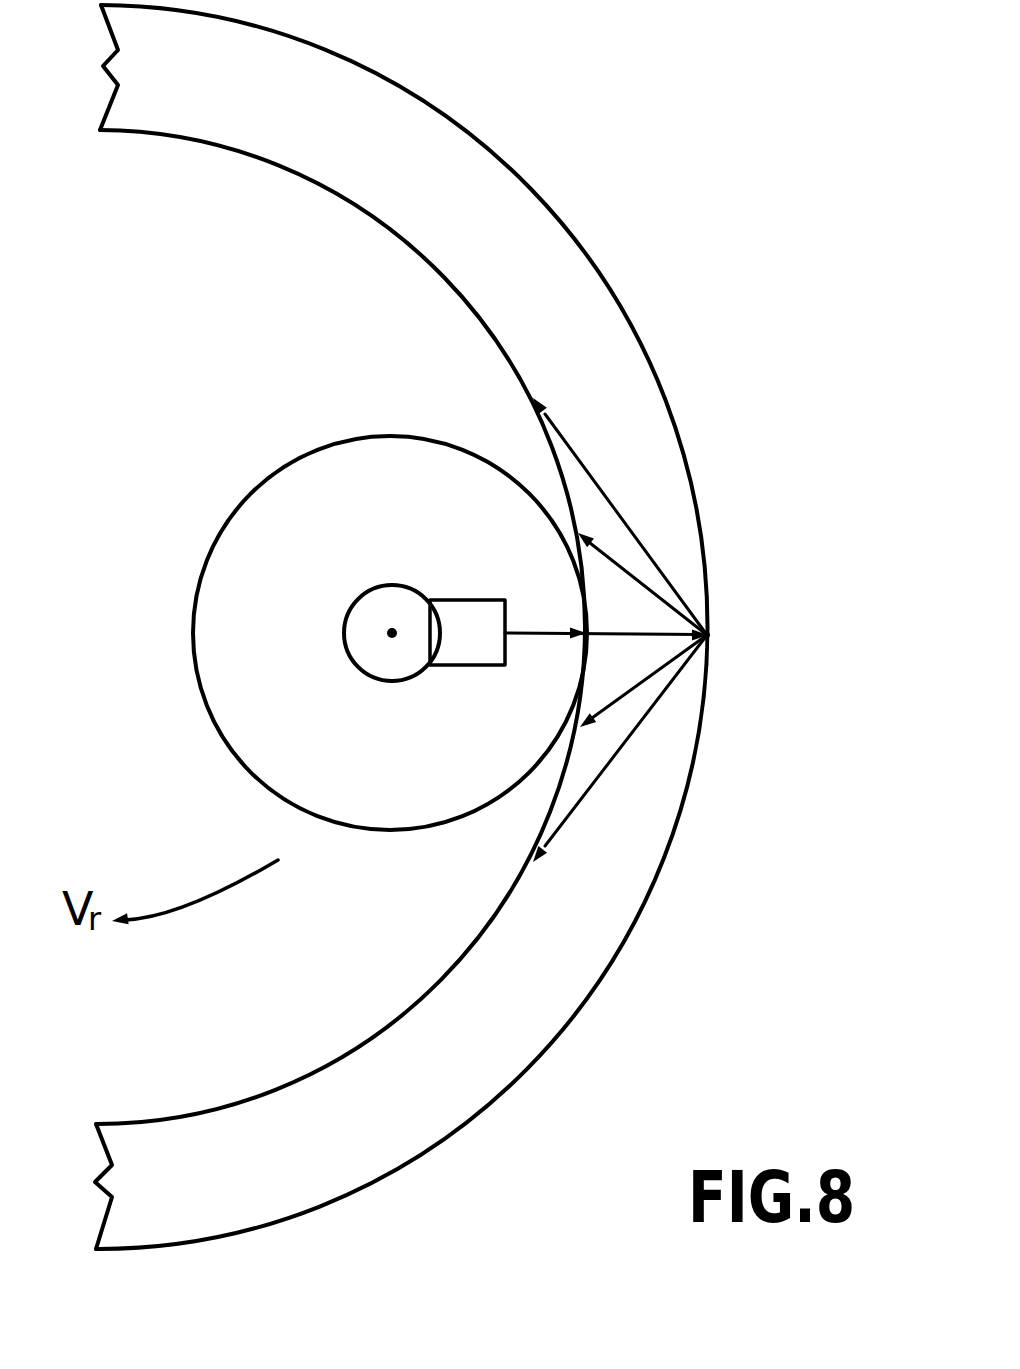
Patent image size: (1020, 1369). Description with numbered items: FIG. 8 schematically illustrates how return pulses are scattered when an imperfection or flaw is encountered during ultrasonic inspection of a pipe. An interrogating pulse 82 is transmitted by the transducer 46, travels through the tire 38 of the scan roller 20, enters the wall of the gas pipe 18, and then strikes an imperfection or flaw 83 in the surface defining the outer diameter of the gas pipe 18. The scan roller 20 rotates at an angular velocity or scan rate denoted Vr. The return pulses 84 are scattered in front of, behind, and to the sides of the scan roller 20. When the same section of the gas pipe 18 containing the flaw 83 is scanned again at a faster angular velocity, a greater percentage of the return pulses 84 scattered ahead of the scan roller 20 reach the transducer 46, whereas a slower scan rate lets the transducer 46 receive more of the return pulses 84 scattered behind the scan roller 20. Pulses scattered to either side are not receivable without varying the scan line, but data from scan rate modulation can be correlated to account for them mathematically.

The gas pipe 18 is at (420, 1093).
The scan roller 20 is at (303, 589).
The tire 38 is at (267, 682).
The transducer 46 is at (478, 628).
The interrogating pulse 82 is at (551, 658).
The imperfection or flaw 83 is at (733, 634).
The return pulses 84 is at (645, 585).